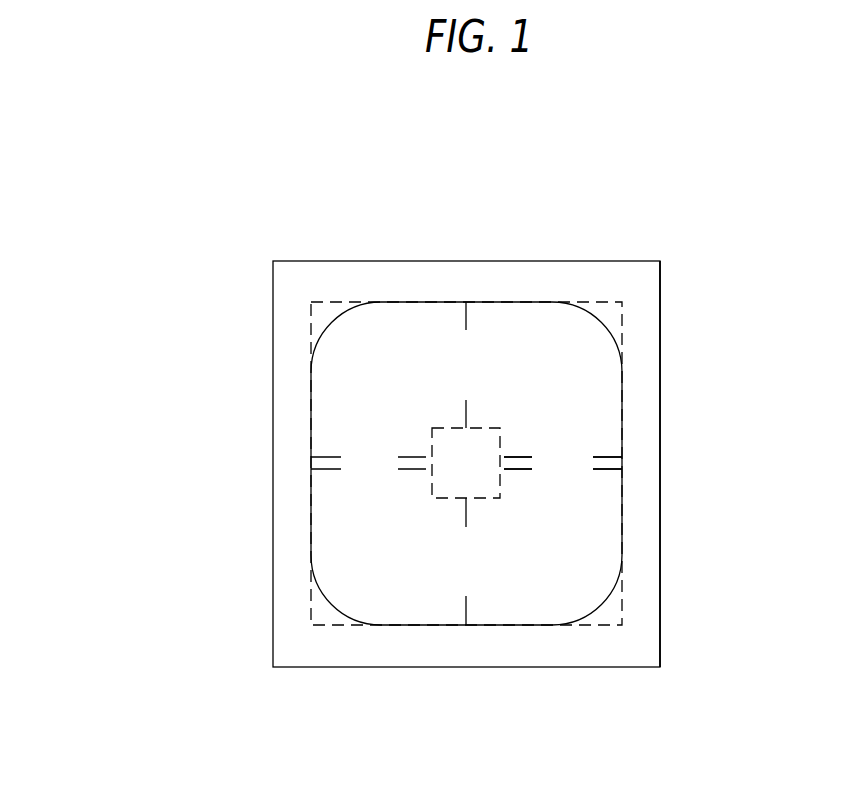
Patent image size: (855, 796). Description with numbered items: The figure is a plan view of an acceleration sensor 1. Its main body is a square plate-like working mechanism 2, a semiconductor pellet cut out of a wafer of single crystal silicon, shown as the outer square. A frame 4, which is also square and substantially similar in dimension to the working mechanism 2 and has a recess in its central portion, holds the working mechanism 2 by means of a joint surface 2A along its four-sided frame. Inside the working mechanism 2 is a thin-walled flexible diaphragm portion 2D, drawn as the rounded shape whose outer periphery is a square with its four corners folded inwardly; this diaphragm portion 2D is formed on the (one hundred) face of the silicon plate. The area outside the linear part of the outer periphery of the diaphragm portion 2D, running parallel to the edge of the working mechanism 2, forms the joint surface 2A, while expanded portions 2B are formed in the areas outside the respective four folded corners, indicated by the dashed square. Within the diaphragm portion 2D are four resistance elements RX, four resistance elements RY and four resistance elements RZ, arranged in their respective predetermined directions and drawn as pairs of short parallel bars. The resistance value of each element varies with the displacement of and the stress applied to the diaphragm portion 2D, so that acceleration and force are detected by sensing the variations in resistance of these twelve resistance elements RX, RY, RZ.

The acceleration sensor 1 is at (606, 197).
The working mechanism 2 is at (285, 310).
The joint surface 2A is at (650, 349).
The expanded portions 2B is at (600, 306).
The diaphragm portion 2D is at (510, 318).
The frame 4 is at (650, 307).
The resistance elements RX is at (515, 455).
The resistance elements RY is at (464, 513).
The resistance elements RZ is at (515, 470).